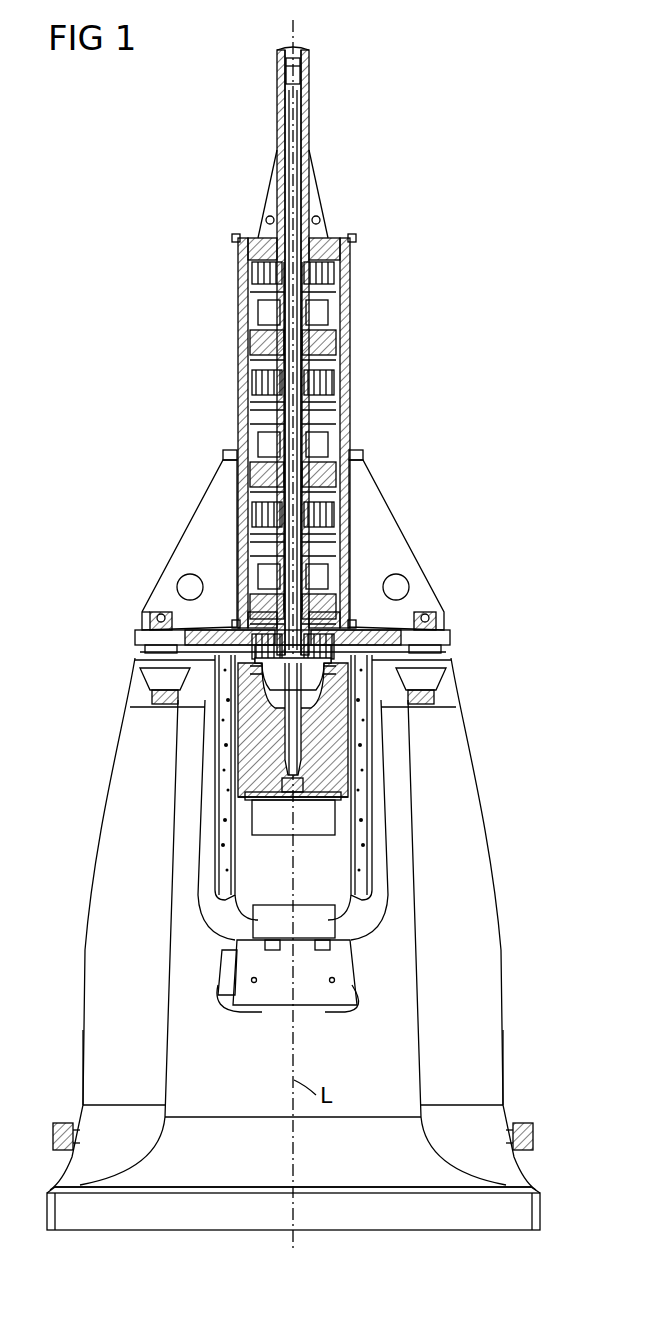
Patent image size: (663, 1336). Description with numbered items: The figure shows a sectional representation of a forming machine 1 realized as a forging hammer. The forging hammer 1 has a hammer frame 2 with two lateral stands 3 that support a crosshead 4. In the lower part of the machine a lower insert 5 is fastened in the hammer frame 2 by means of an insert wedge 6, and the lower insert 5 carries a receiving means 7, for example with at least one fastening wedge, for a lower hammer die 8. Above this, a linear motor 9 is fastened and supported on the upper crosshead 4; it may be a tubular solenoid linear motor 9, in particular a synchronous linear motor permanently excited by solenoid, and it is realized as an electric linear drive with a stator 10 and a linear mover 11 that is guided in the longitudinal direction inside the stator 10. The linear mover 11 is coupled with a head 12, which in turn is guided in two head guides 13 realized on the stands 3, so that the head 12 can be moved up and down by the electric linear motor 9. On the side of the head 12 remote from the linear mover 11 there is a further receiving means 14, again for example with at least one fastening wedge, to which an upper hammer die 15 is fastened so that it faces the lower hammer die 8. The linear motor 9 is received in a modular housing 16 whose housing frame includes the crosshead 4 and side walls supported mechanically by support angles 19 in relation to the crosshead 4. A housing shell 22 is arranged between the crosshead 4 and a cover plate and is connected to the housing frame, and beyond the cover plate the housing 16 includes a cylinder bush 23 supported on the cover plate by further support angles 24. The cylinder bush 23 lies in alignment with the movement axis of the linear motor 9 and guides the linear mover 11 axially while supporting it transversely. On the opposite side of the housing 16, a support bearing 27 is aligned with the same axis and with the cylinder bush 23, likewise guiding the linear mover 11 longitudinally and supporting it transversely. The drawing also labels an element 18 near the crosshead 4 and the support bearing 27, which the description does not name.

The forming machine 1 is at (438, 225).
The hammer frame 2 is at (505, 960).
The lateral stands 3 is at (90, 1060).
The crosshead 4 is at (450, 638).
The lower insert 5 is at (262, 1000).
The insert wedge 6 is at (222, 970).
The receiving means 7 is at (313, 1000).
The lower hammer die 8 is at (274, 915).
The linear motor 9 is at (294, 454).
The stator 10 is at (351, 400).
The linear mover 11 is at (297, 120).
The head 12 is at (247, 740).
The head guides 13 is at (225, 838).
The further receiving means 14 is at (350, 742).
The upper hammer die 15 is at (322, 832).
The housing 16 is at (352, 340).
The plate insert 18 is at (365, 640).
The support angles 19 is at (400, 550).
The housing shell 22 is at (345, 522).
The cylinder bush 23 is at (302, 72).
The further support angles 24 is at (315, 200).
The support bearing 27 is at (222, 636).